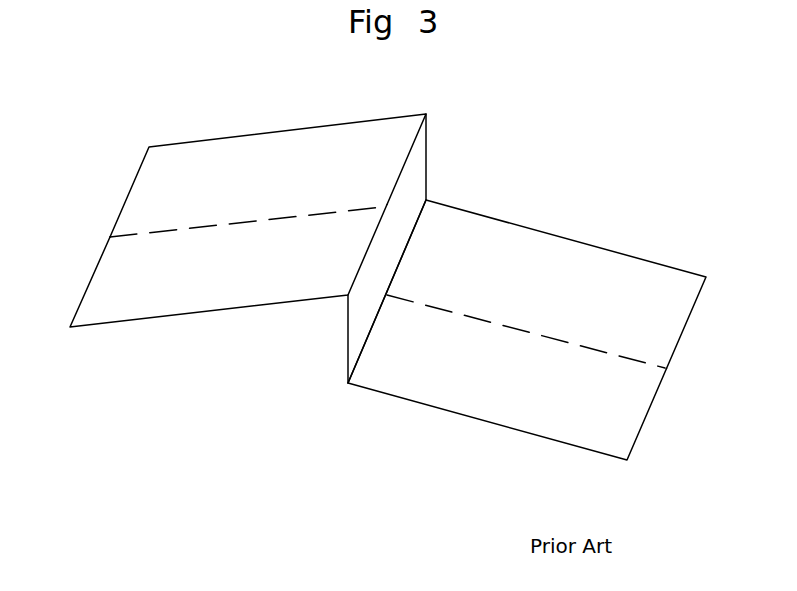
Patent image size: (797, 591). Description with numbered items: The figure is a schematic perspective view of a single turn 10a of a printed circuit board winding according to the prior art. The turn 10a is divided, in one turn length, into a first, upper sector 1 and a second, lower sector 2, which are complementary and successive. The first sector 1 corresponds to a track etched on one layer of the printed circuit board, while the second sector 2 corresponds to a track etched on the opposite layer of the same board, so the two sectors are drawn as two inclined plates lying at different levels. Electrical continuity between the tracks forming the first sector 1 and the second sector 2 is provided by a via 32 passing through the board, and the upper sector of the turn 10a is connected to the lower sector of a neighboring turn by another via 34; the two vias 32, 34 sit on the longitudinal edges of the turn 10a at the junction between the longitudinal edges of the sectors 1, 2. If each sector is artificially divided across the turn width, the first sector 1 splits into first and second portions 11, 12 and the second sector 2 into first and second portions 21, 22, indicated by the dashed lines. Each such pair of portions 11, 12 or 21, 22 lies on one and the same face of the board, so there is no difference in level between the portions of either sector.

The first upper sector 1 is at (225, 258).
The second lower sector 2 is at (539, 343).
The turn 10a is at (346, 333).
The first portion of first sector 11 is at (115, 287).
The second portion of first sector 12 is at (180, 164).
The first portion of second sector 21 is at (580, 270).
The second portion of second sector 22 is at (615, 406).
The via 32 is at (427, 160).
The via 34 is at (349, 357).